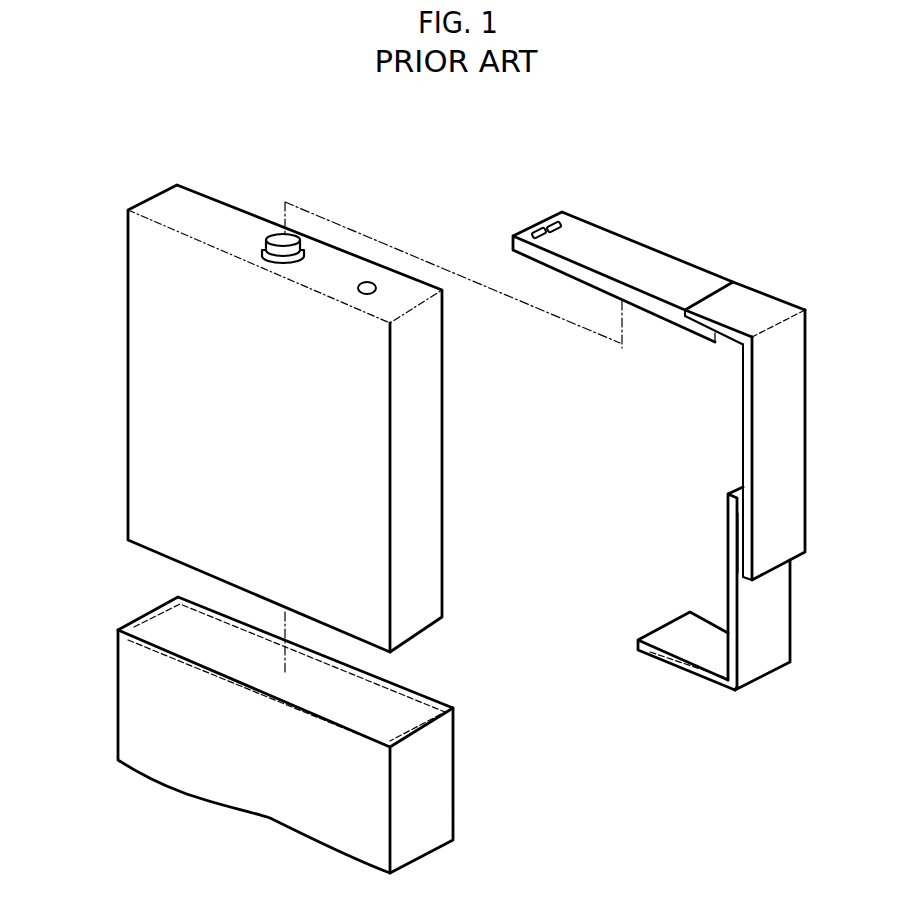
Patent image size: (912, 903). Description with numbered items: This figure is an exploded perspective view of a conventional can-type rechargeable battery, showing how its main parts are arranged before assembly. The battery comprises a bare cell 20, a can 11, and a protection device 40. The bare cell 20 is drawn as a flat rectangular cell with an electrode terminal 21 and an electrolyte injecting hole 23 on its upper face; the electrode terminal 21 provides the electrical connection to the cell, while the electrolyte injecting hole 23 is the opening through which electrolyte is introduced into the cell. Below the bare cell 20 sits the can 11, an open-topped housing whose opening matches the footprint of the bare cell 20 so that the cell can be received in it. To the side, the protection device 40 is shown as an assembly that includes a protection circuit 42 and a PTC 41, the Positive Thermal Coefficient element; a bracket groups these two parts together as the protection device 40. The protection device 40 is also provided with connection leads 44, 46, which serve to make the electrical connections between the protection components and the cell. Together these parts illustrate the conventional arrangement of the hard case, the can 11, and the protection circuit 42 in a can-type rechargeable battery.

The can 11 is at (137, 697).
The bare cell 20 is at (137, 375).
The electrode terminal 21 is at (265, 236).
The electrolyte injecting hole 23 is at (371, 281).
The protection device 40 is at (642, 407).
The PTC 41 is at (737, 540).
The protection circuit 42 is at (680, 330).
The connection lead 44 is at (788, 443).
The connection lead 46 is at (760, 658).